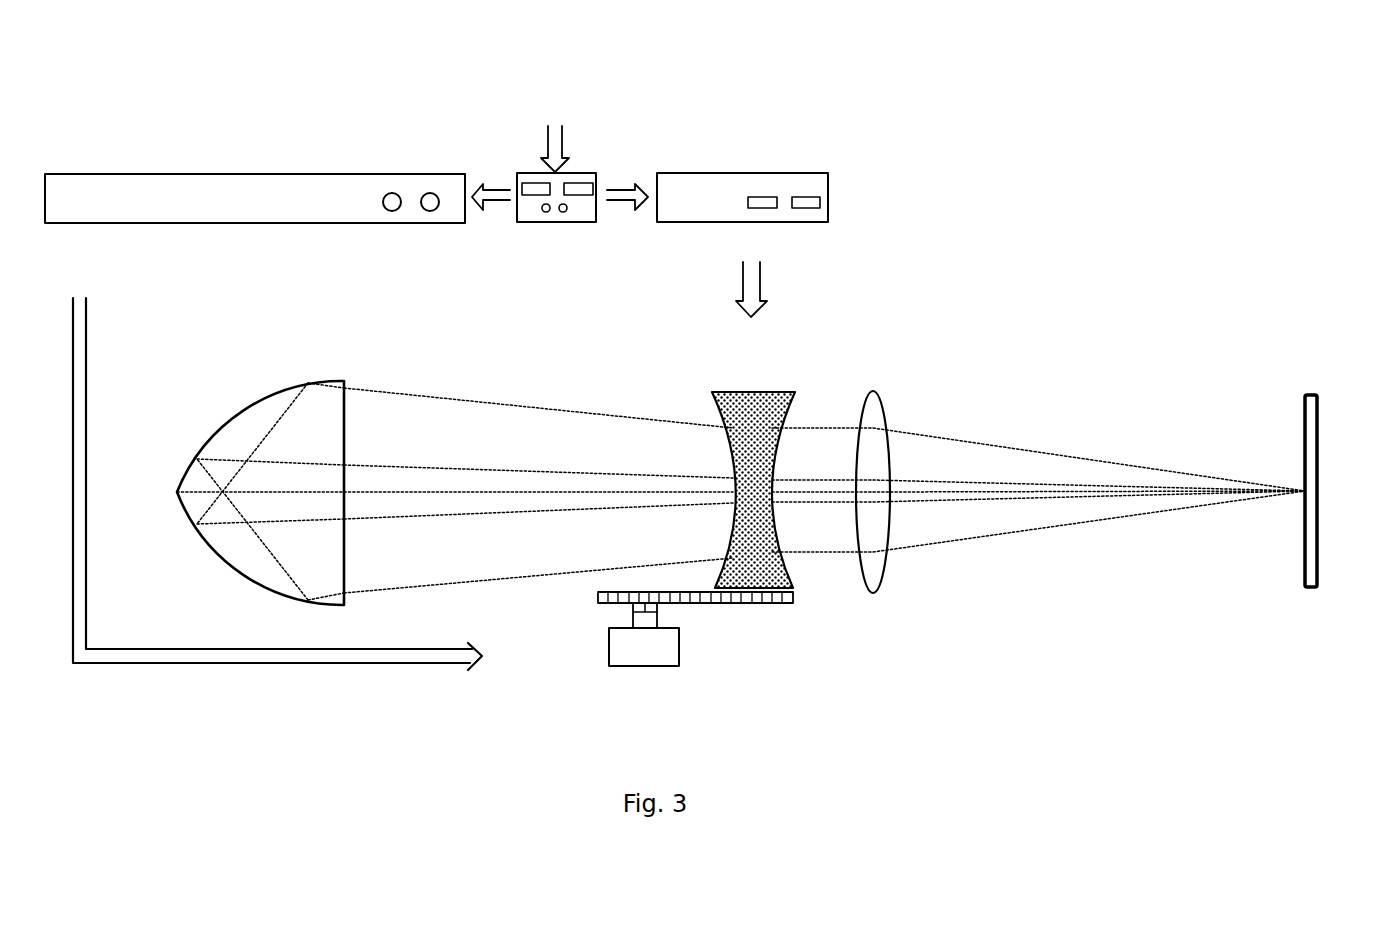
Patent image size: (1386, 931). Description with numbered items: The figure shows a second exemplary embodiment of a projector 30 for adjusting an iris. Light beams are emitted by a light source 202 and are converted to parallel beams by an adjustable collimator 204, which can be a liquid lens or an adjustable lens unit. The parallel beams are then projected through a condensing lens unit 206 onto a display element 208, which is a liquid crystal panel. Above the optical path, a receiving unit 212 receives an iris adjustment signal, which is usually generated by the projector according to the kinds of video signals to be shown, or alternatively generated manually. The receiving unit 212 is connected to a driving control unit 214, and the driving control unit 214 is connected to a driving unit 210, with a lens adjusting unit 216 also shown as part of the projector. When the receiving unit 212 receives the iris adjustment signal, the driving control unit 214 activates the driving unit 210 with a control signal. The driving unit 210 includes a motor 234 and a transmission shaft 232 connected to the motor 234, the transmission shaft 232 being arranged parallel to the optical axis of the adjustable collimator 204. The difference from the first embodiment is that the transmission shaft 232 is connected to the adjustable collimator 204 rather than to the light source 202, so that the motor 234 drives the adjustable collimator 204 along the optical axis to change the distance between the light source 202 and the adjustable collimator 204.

The projector 30 is at (1009, 136).
The light source 202 is at (228, 423).
The adjustable collimator 204 is at (762, 392).
The condensing lens unit 206 is at (878, 391).
The display element 208 is at (1318, 397).
The driving unit 210 is at (743, 645).
The receiving unit 212 is at (577, 172).
The driving control unit 214 is at (374, 172).
The lens adjusting unit 216 is at (752, 172).
The transmission shaft 232 is at (738, 603).
The motor 234 is at (609, 655).